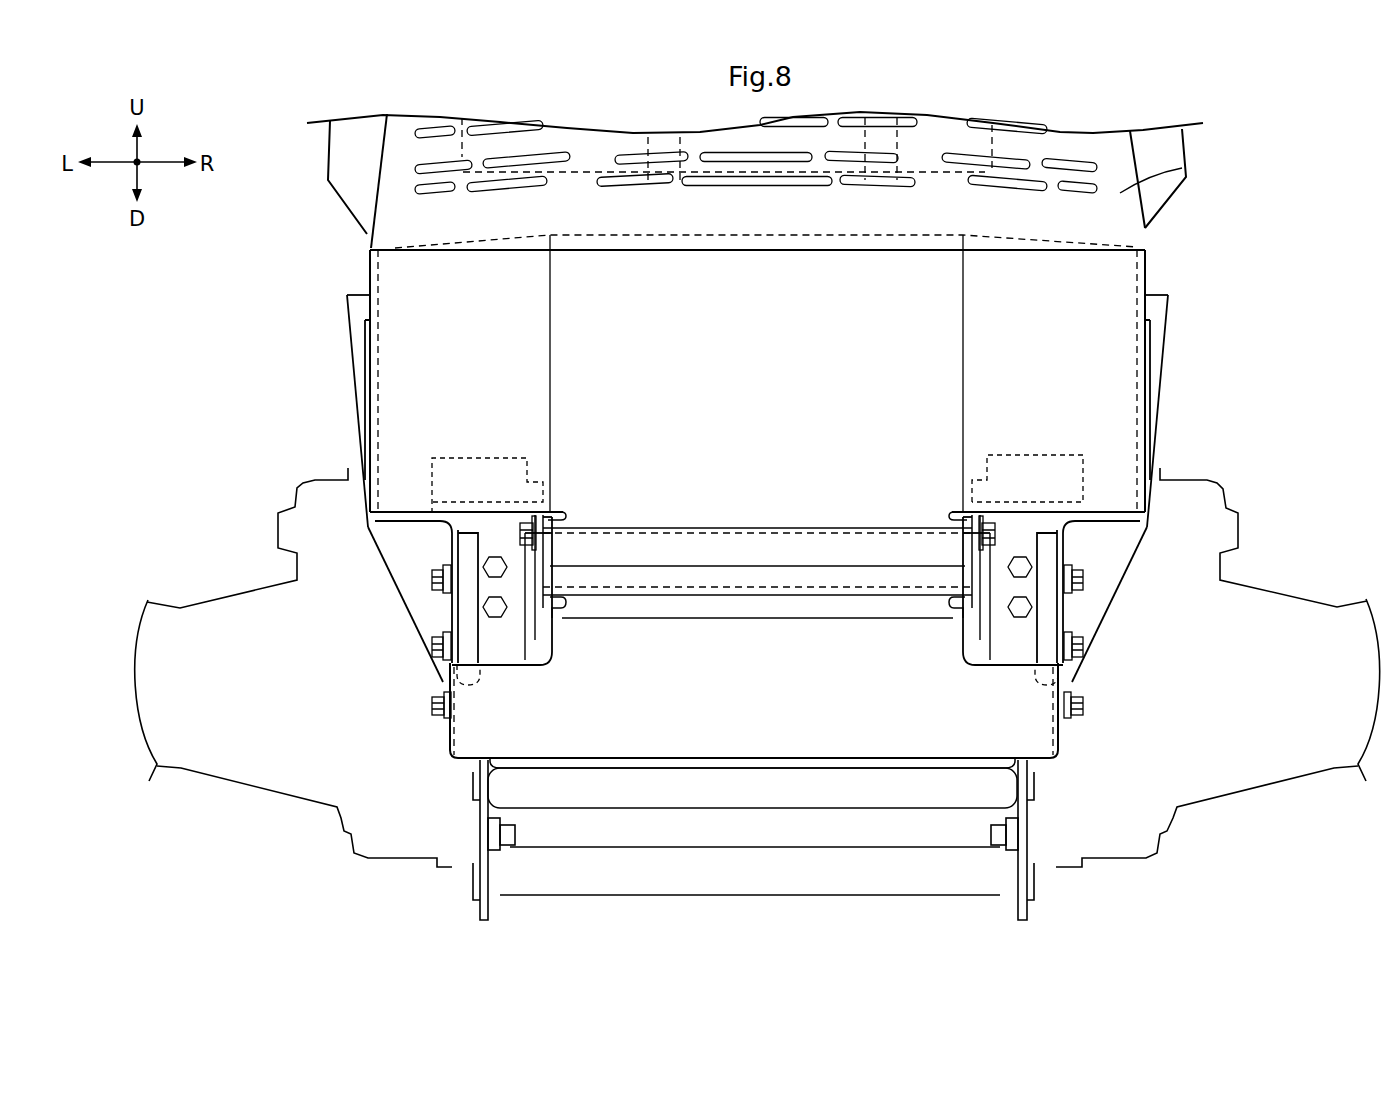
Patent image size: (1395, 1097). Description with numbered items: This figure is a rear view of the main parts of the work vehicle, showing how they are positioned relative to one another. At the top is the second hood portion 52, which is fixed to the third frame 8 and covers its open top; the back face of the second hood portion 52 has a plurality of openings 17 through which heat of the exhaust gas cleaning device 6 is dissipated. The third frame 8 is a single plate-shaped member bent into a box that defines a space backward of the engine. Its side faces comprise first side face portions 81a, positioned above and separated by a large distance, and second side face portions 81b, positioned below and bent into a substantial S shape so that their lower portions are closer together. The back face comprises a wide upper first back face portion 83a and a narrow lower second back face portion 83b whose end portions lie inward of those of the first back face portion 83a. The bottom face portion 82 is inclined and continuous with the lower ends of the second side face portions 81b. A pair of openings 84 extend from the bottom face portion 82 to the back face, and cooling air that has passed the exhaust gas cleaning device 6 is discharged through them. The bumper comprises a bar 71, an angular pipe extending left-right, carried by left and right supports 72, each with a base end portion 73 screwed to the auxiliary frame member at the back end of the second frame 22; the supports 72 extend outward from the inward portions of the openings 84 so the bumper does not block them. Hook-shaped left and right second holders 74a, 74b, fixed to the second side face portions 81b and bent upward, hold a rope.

The second hood portion 52 is at (1183, 168).
The openings 17 is at (1013, 186).
The exhaust gas cleaning device 6 is at (578, 174).
The third frame 8 is at (1150, 268).
The first back face portion 83a is at (795, 305).
The first side face portions 81a is at (365, 370).
The second side face portions 81b is at (445, 606).
The base end portion 73 is at (497, 650).
The openings 84 is at (536, 650).
The left second holder 74a is at (468, 575).
The right second holder 74b is at (1047, 575).
The supports 72 is at (971, 555).
The bar 71 is at (748, 545).
The second back face portion 83b is at (805, 603).
The bottom face portion 82 is at (747, 722).
The second frame 22 is at (470, 910).